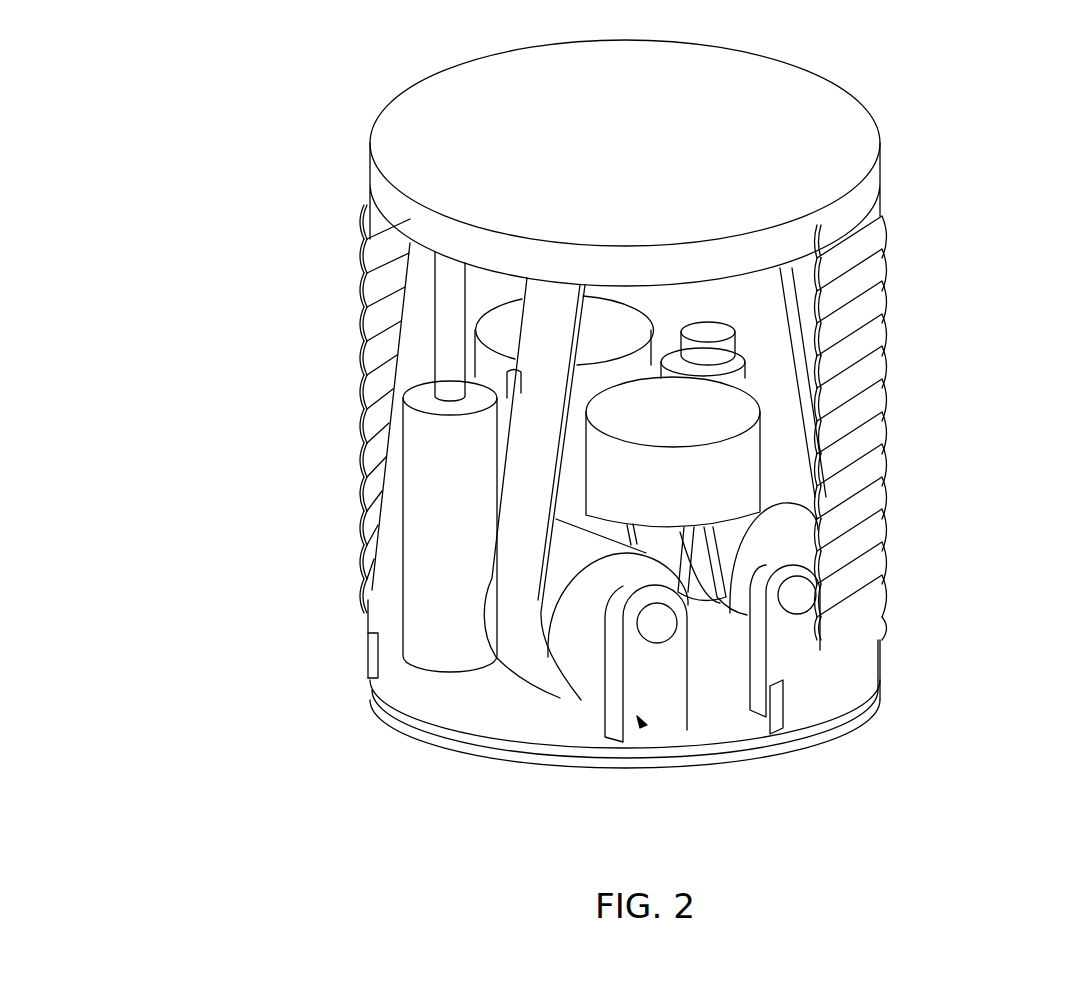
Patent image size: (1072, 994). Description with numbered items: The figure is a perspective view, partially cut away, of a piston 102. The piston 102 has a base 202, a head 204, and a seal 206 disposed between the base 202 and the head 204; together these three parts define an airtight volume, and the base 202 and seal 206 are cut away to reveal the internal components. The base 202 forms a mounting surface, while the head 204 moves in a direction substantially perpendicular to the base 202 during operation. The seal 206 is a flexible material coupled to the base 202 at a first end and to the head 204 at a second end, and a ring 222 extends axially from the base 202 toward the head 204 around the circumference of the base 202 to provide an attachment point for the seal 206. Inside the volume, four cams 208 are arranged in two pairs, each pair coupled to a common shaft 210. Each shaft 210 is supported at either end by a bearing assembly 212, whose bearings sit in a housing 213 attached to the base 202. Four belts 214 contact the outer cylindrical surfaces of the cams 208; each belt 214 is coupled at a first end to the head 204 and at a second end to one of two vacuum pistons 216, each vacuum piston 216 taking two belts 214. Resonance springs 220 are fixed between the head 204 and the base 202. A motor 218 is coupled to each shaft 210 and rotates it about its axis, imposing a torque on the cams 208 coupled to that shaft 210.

The piston 102 is at (238, 70).
The base 202 is at (868, 693).
The head 204 is at (855, 200).
The seal 206 is at (870, 462).
The cam 208 is at (378, 490).
The shaft 210 is at (655, 628).
The bearing assembly 212 is at (820, 650).
The housing 213 is at (793, 683).
The belt 214 is at (422, 352).
The vacuum piston 216 is at (618, 368).
The motor 218 is at (525, 297).
The resonance spring 220 is at (807, 358).
The ring 222 is at (867, 672).